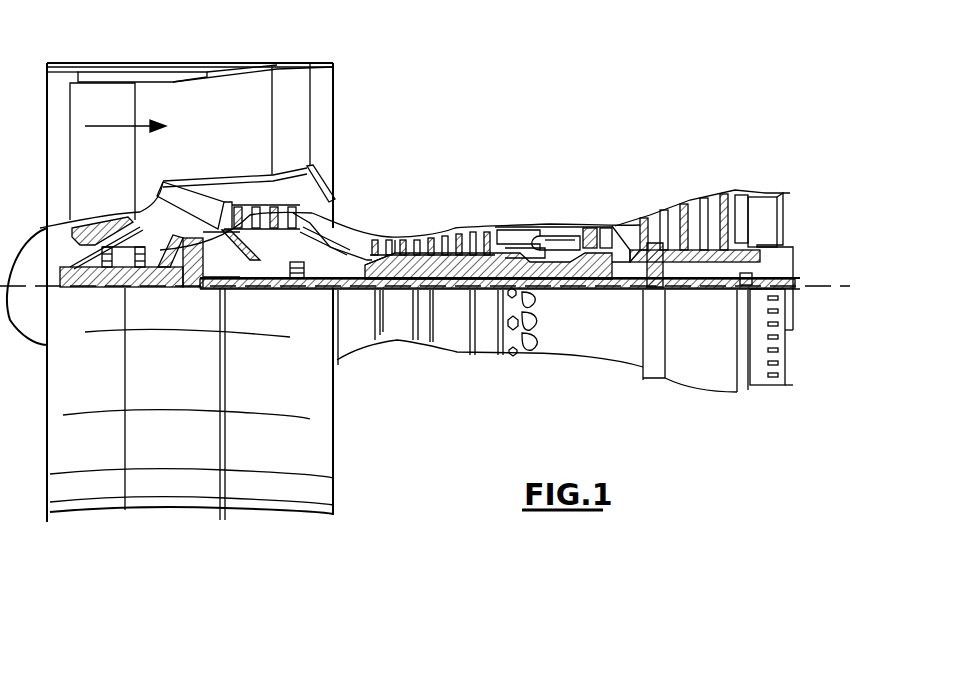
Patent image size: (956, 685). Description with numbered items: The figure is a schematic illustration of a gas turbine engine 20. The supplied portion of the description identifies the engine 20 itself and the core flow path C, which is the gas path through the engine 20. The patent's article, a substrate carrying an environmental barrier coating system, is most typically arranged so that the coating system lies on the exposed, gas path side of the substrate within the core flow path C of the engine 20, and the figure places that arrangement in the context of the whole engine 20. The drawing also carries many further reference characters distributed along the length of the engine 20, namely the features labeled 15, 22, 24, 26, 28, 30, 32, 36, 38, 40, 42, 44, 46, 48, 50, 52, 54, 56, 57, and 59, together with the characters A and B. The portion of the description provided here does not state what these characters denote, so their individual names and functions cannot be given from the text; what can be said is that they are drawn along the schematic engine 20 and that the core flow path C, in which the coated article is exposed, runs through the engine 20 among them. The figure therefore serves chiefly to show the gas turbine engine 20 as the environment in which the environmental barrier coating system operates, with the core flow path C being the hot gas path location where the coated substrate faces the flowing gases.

The gas turbine engine 20 is at (556, 98).
The fan section 22 is at (133, 57).
The compressor section 24 is at (375, 205).
The combustor section 26 is at (541, 193).
The turbine section 28 is at (672, 155).
The low speed spool 30 is at (453, 295).
The high speed spool 32 is at (484, 253).
The engine static structure 36 is at (487, 360).
The bearing systems 38 is at (628, 288).
The inner shaft 40 is at (345, 337).
The fan 42 is at (118, 164).
The low pressure compressor 44 is at (283, 212).
The low pressure turbine 46 is at (702, 200).
The geared architecture 48 is at (193, 272).
The outer shaft 50 is at (547, 280).
The high pressure compressor 52 is at (433, 232).
The high pressure turbine 54 is at (590, 228).
The combustor 56 is at (545, 243).
The mid-turbine frame 57 is at (636, 205).
The airfoils/vanes 59 is at (650, 257).
The nacelle/fan case 15 is at (190, 68).
The engine central longitudinal axis A is at (853, 287).
The bypass flow path B is at (110, 123).
The core flow path C is at (186, 208).